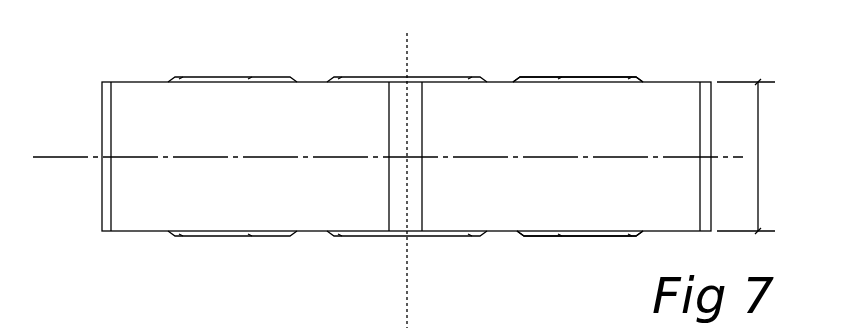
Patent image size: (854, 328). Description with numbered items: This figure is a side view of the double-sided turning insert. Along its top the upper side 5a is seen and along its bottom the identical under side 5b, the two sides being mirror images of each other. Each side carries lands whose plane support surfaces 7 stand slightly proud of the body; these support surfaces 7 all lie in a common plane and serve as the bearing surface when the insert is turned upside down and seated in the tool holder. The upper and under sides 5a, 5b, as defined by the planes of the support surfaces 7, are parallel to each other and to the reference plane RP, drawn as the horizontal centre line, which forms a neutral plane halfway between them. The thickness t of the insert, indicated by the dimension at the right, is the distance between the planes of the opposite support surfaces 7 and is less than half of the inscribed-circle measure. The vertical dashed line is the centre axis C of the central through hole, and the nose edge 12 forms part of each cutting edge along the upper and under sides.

The nose edge 12 is at (406, 205).
The reference plane RP is at (388, 146).
The centre axis C is at (408, 58).
The upper side 5a is at (518, 62).
The under side 5b is at (510, 253).
The support surface 7 is at (590, 78).
The thickness t is at (746, 156).